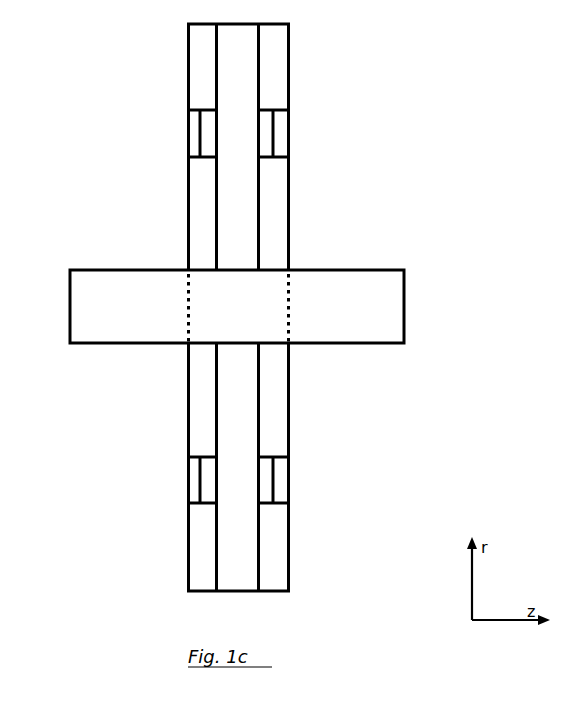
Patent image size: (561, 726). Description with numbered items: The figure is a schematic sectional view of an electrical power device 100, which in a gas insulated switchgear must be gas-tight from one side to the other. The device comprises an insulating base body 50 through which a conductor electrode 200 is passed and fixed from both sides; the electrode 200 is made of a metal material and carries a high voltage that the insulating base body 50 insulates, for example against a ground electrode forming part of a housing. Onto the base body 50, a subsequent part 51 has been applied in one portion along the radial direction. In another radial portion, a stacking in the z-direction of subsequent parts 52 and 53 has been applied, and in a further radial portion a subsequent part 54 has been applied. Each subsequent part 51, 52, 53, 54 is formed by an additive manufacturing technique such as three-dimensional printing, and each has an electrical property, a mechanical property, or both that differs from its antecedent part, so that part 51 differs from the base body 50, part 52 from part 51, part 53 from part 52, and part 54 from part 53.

The electrical power device 100 is at (251, 307).
The conductor electrode 200 is at (145, 330).
The insulating base body 50 is at (230, 373).
The subsequent part 51 is at (203, 430).
The subsequent part 52 is at (196, 470).
The subsequent part 53 is at (208, 487).
The subsequent part 54 is at (200, 523).